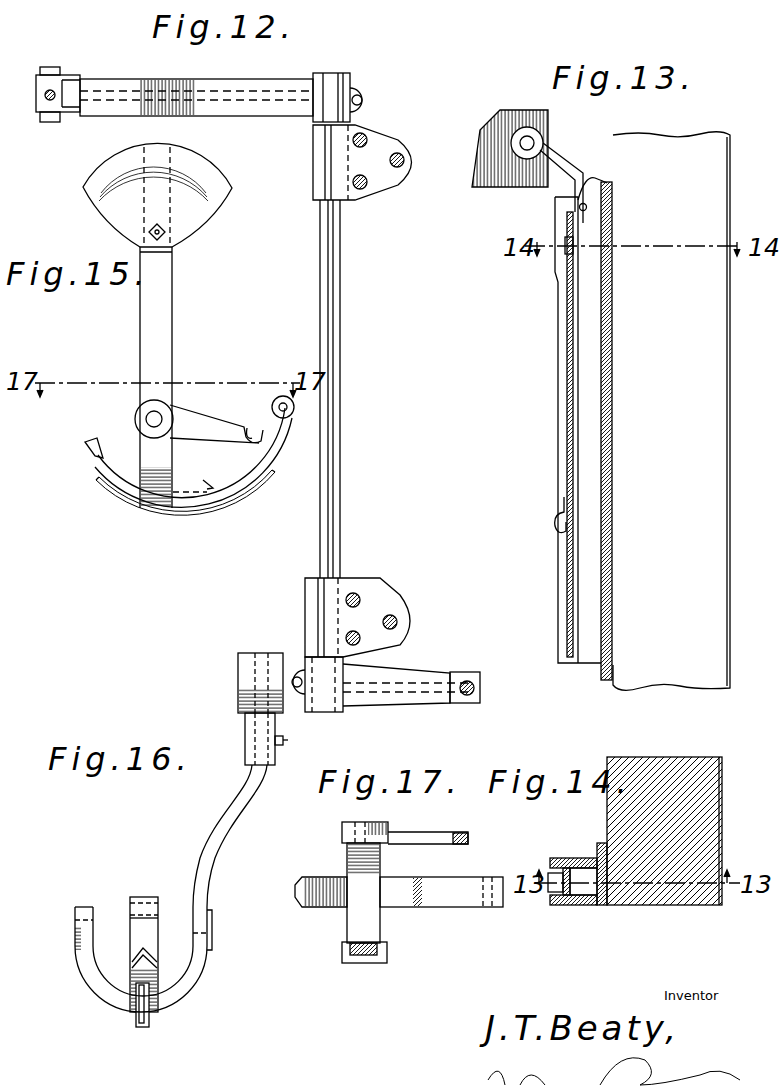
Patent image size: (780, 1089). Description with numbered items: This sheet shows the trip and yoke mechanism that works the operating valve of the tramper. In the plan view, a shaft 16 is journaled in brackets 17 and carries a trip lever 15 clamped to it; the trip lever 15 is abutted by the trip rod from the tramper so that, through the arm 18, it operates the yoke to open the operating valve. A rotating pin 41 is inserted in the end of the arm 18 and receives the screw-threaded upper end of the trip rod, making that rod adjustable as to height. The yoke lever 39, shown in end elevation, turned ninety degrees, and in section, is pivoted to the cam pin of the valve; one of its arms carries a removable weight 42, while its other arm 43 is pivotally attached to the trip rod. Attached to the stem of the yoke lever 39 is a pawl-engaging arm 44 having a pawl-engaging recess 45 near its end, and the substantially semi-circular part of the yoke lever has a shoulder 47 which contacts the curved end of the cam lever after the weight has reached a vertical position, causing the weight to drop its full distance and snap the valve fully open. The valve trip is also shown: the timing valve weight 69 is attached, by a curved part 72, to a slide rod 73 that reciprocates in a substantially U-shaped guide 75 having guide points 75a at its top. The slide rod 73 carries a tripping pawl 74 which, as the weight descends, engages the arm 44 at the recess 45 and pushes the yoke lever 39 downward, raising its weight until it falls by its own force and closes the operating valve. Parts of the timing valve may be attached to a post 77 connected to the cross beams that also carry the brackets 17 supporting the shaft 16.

In FIG. 12, the rotating pin 41 is at (48, 73).
In FIG. 12, the arm 18 is at (262, 92).
In FIG. 12, the brackets 17 is at (382, 147).
In FIG. 12, the shaft 16 is at (341, 448).
In FIG. 12, the trip lever 15 is at (420, 680).
In FIG. 15, the removable weight 42 is at (93, 190).
In FIG. 16, the removable weight 42 is at (245, 668).
In FIG. 15, the yoke lever 39 is at (160, 326).
In FIG. 17, the yoke lever 39 is at (368, 963).
In FIG. 16, the yoke lever 39 is at (232, 828).
In FIG. 15, the pawl-engaging arm 44 is at (190, 422).
In FIG. 17, the pawl-engaging arm 44 is at (426, 825).
In FIG. 15, the pawl-engaging recess 45 is at (250, 428).
In FIG. 17, the pawl-engaging recess 45 is at (470, 825).
In FIG. 15, the arm 43 is at (122, 495).
In FIG. 17, the arm 43 is at (345, 917).
In FIG. 16, the arm 43 is at (112, 1000).
In FIG. 15, the shoulder 47 is at (207, 492).
In FIG. 17, the shoulder 47 is at (425, 907).
In FIG. 13, the timing valve weight 69 is at (505, 122).
In FIG. 13, the curved part 72 is at (565, 160).
In FIG. 13, the U-shaped guide 75 is at (561, 423).
In FIG. 14, the U-shaped guide 75 is at (593, 857).
In FIG. 13, the guide points 75a is at (564, 256).
In FIG. 14, the guide points 75a is at (564, 867).
In FIG. 13, the slide rod 73 is at (569, 345).
In FIG. 13, the tripping pawl 74 is at (555, 518).
In FIG. 14, the tripping pawl 74 is at (550, 892).
In FIG. 13, the post 77 is at (665, 411).
In FIG. 14, the post 77 is at (683, 765).